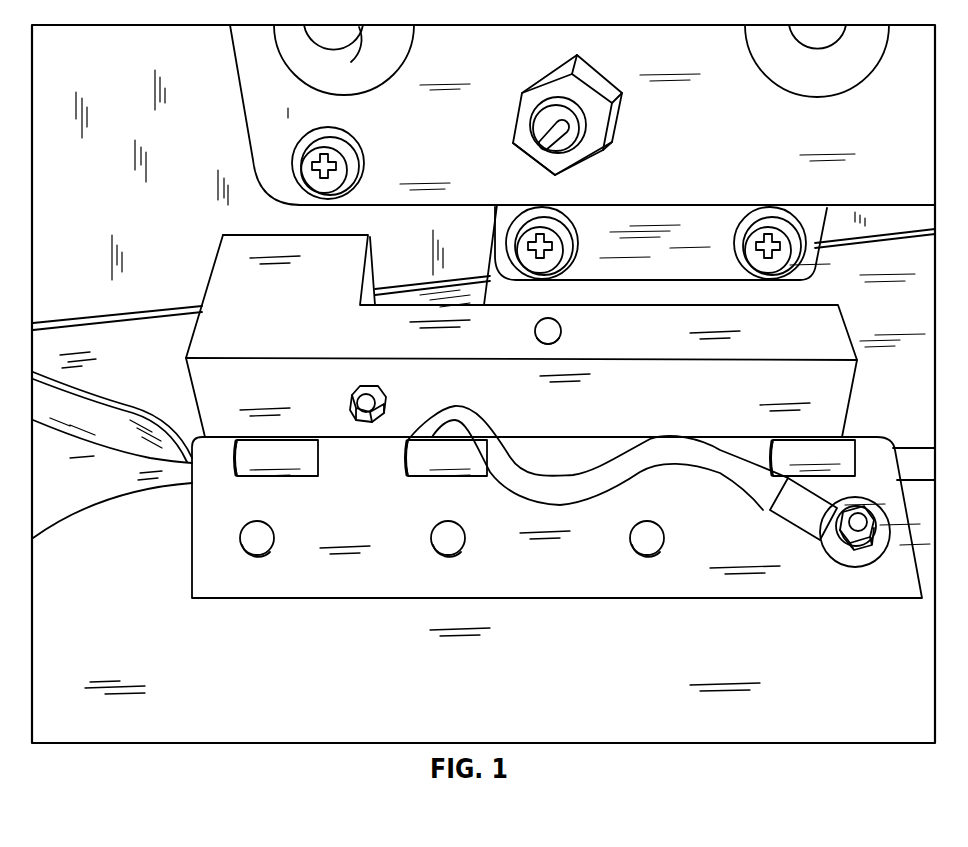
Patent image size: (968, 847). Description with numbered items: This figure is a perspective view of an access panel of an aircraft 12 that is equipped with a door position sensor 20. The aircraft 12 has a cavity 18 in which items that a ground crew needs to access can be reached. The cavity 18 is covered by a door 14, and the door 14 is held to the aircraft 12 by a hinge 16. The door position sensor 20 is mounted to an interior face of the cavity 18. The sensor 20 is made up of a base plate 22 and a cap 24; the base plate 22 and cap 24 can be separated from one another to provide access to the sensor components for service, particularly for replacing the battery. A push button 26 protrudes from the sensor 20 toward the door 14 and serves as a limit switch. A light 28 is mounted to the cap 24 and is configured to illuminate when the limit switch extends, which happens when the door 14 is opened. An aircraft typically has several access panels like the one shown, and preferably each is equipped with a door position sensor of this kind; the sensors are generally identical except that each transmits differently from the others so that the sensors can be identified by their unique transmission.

The aircraft 12 is at (52, 490).
The door 14 is at (92, 564).
The hinge 16 is at (368, 512).
The cavity 18 is at (140, 378).
The door position sensor 20 is at (548, 336).
The base plate 22 is at (840, 412).
The cap 24 is at (616, 322).
The push button 26 is at (388, 398).
The light 28 is at (535, 328).